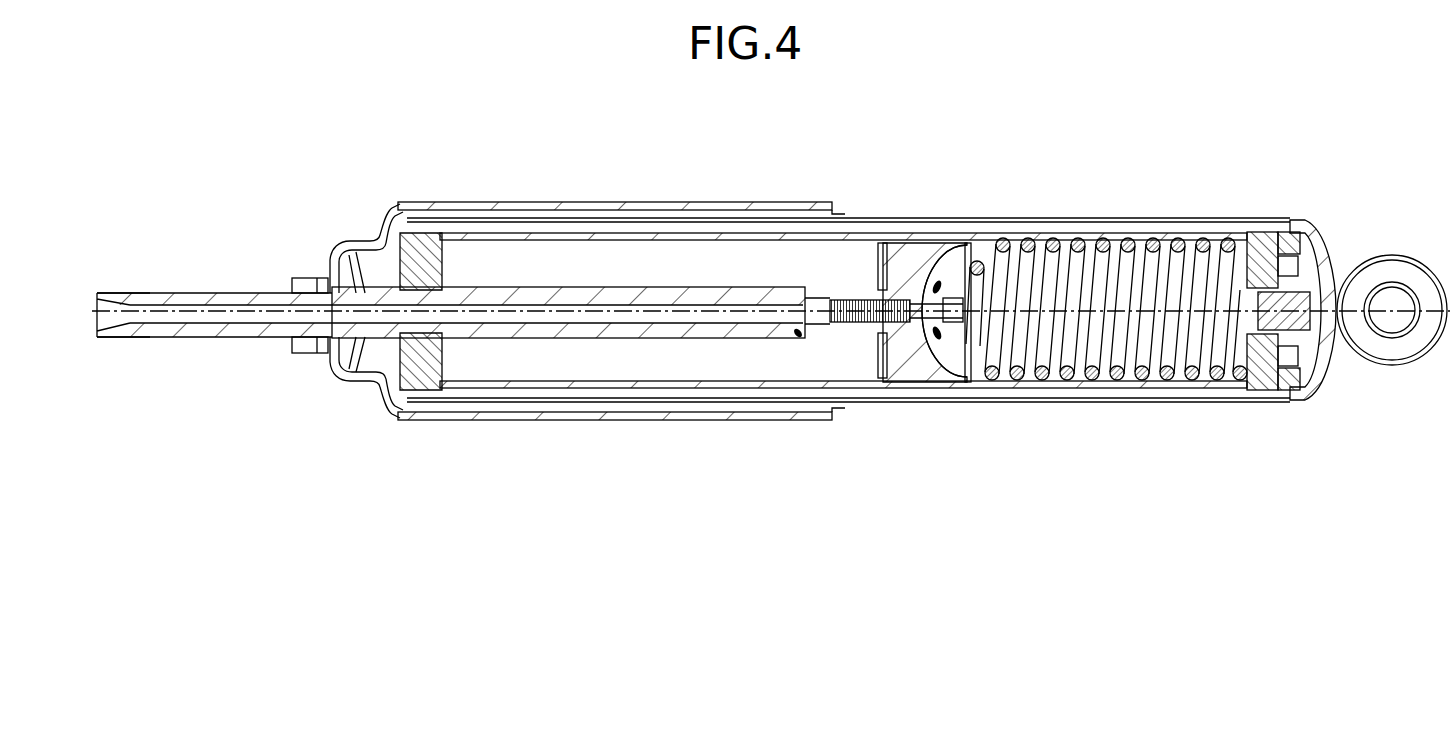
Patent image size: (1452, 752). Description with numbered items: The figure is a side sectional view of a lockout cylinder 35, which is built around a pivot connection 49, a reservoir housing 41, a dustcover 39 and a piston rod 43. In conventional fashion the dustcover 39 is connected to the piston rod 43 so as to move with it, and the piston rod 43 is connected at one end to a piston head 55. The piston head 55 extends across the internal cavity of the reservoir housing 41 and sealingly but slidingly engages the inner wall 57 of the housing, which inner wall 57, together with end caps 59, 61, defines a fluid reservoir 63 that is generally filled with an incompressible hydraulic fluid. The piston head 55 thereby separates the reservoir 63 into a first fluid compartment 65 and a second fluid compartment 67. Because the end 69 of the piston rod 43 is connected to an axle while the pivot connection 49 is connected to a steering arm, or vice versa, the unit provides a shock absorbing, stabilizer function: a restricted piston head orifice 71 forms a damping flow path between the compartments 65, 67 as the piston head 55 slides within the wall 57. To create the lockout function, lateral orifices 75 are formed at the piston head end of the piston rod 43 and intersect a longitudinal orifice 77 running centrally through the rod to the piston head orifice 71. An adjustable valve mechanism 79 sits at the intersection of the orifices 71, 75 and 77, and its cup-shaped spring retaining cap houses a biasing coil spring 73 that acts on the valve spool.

The lockout cylinder 35 is at (771, 270).
The dustcover 39 is at (706, 202).
The reservoir housing 41 is at (1218, 219).
The piston rod 43 is at (238, 292).
The pivot connection 49 is at (1362, 268).
The piston head 55 is at (946, 252).
The inner wall 57 is at (1012, 236).
The end cap 59 is at (1266, 237).
The end cap 61 is at (423, 236).
The fluid reservoir 63 is at (980, 372).
The first fluid compartment 65 is at (1118, 247).
The second fluid compartment 67 is at (672, 270).
The end of piston rod 69 is at (145, 292).
The piston head orifice 71 is at (925, 292).
The biasing coil spring 73 is at (1078, 247).
The lateral orifice 75 is at (878, 290).
The longitudinal orifice 77 is at (582, 313).
The adjustable valve mechanism 79 is at (797, 335).